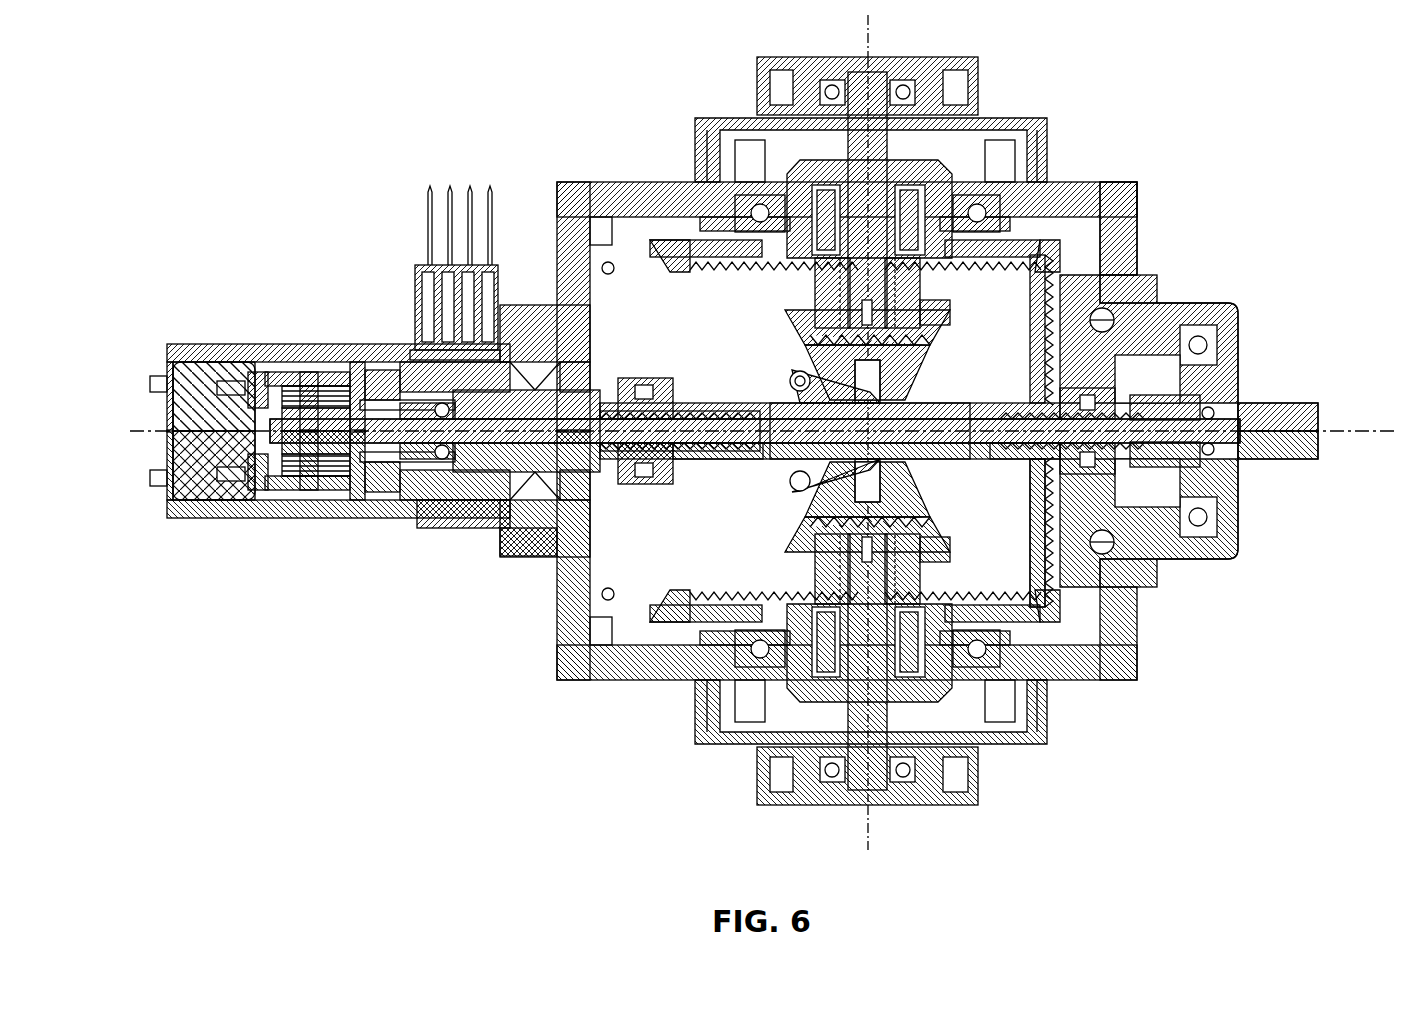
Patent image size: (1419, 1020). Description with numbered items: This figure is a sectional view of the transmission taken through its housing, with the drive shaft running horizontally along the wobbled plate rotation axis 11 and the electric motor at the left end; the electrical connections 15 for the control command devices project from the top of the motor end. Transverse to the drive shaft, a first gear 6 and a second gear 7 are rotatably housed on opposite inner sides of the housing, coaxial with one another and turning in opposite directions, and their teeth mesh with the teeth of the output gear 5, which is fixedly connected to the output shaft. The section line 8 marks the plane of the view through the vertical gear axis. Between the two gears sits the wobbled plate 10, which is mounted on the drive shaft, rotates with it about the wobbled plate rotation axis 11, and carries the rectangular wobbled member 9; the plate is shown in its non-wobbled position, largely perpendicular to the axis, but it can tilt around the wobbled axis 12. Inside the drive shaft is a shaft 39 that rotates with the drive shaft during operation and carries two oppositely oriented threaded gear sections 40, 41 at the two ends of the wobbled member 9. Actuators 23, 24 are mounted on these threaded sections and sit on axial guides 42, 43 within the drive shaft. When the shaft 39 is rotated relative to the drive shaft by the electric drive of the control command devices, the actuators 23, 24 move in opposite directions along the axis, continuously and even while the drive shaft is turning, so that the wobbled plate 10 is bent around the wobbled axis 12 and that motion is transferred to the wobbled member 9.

The output gear 5 is at (1125, 265).
The first gear 6 is at (972, 262).
The second gear 7 is at (972, 600).
The vertical axis 8 is at (878, 22).
The wobbled member 9 is at (800, 352).
The wobbled plate 10 is at (885, 380).
The wobbled plate rotation axis 11 is at (1392, 431).
The wobbled axis 12 is at (812, 452).
The connections 15 is at (455, 158).
The actuator 23 is at (630, 378).
The actuator 24 is at (1222, 372).
The shaft 39 is at (790, 455).
The threaded gear section 40 is at (690, 452).
The threaded gear section 41 is at (1015, 462).
The axial guide 42 is at (690, 402).
The axial guide 43 is at (1034, 480).